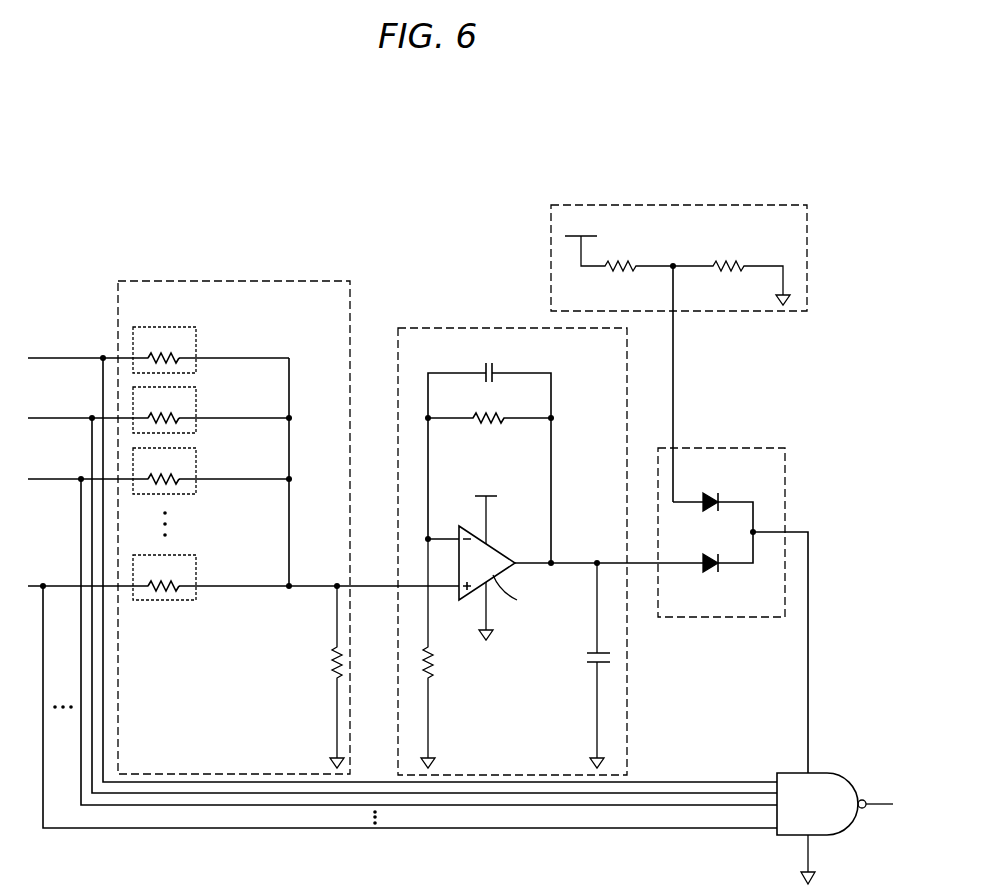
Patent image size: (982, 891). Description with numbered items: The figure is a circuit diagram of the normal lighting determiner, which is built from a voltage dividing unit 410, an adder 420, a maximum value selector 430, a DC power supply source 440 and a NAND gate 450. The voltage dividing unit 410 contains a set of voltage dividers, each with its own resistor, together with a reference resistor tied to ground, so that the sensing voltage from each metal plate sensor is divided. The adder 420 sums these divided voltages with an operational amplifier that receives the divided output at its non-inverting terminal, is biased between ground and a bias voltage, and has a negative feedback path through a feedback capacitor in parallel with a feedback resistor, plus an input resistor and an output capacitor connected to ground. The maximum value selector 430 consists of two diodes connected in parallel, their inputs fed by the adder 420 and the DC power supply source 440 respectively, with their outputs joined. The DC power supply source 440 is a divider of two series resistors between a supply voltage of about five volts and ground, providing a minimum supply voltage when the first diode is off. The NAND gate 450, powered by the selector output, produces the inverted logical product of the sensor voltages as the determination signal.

The voltage dividing unit 410 is at (234, 281).
The adder 420 is at (513, 328).
The maximum value selector 430 is at (720, 448).
The DC power supply source 440 is at (680, 205).
The NAND gate 450 is at (837, 773).